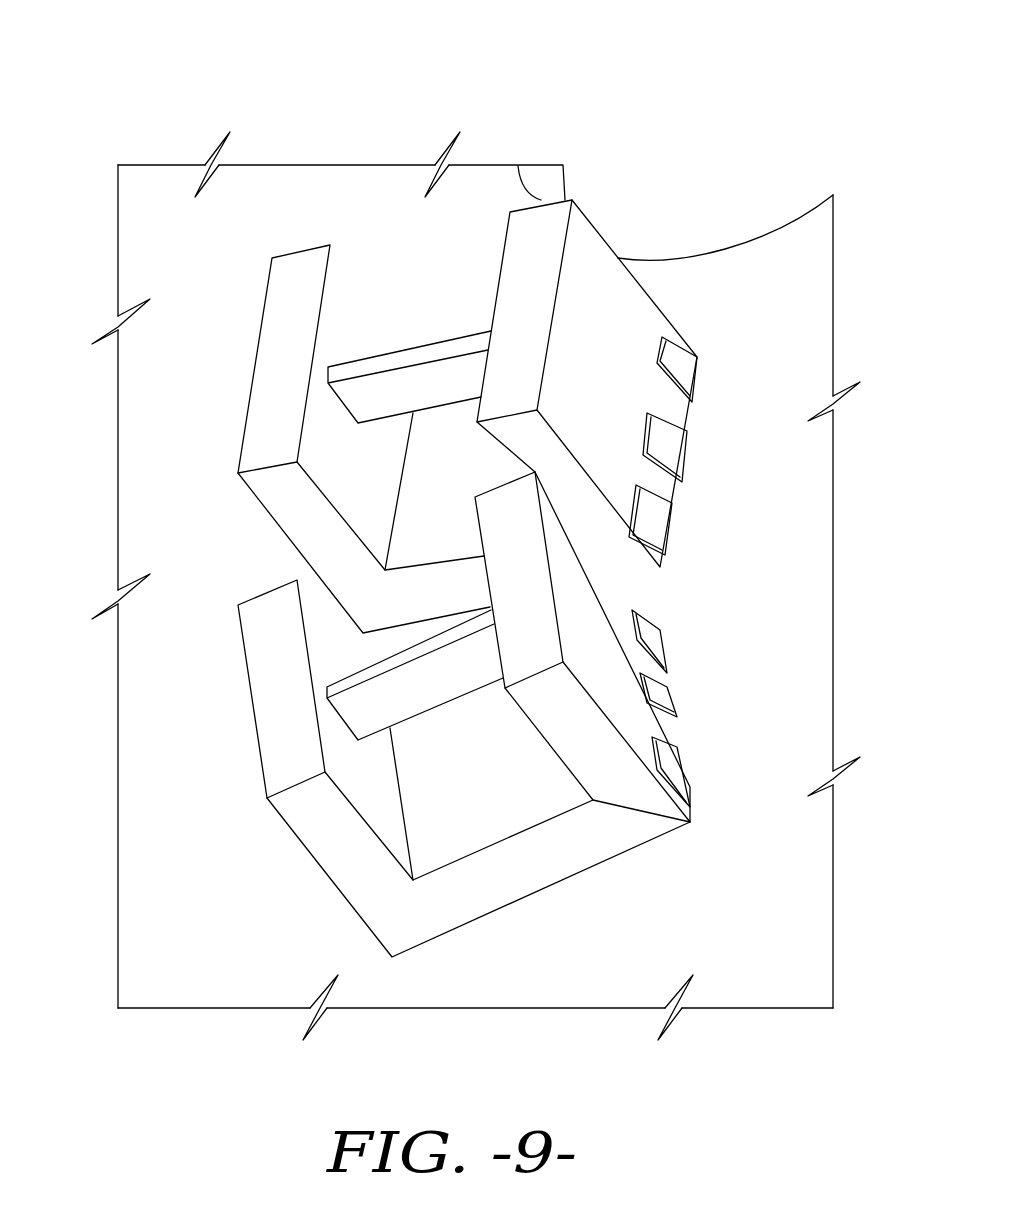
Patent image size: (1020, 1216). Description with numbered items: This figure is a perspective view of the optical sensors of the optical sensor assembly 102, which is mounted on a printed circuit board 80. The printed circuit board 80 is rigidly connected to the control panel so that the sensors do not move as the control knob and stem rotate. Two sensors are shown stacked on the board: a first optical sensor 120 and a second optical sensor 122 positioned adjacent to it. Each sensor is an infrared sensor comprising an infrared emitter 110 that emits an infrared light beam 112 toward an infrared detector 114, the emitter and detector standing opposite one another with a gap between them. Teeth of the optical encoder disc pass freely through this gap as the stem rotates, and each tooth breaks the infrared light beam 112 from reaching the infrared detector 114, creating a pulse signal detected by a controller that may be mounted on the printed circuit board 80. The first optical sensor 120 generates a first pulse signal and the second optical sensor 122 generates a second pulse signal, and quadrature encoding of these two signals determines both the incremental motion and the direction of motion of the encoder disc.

The printed circuit board 80 is at (747, 980).
The optical sensor assembly 102 is at (282, 100).
The infrared emitter 110 is at (530, 310).
The infrared light beam 112 is at (407, 390).
The infrared detector 114 is at (252, 423).
The first optical sensor 120 is at (255, 362).
The second optical sensor 122 is at (244, 660).